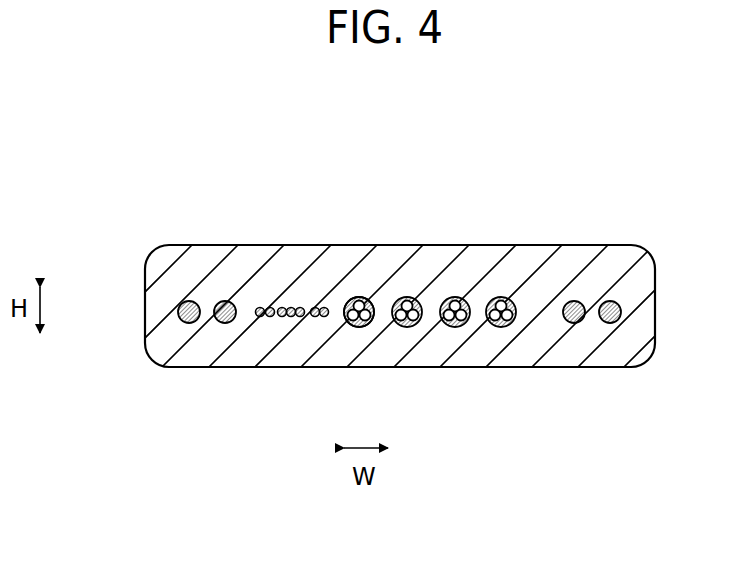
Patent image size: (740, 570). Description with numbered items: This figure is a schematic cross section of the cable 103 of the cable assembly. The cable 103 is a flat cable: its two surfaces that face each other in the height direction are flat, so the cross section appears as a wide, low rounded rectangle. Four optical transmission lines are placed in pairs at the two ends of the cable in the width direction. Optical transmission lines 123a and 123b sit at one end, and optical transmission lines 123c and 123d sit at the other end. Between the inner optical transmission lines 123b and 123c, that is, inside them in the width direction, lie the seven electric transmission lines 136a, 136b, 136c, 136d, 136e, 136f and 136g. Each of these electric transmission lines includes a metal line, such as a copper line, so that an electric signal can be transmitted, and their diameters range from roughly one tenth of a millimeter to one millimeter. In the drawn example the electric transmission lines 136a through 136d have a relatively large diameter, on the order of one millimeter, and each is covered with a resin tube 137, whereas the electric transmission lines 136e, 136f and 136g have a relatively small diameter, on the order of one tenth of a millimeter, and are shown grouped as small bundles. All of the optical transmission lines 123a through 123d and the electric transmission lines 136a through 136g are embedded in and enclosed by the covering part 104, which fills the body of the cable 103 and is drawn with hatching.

The cable 103 is at (145, 323).
The covering part 104 is at (168, 290).
The optical transmission line 123a is at (609, 301).
The optical transmission line 123b is at (573, 301).
The optical transmission line 123c is at (226, 301).
The optical transmission line 123d is at (189, 301).
The resin tube 137 is at (348, 299).
The electric transmission line 136a is at (507, 326).
The electric transmission line 136b is at (462, 326).
The electric transmission line 136c is at (410, 327).
The electric transmission line 136d is at (363, 327).
The electric transmission line 136e is at (320, 318).
The electric transmission line 136f is at (283, 318).
The electric transmission line 136g is at (262, 318).